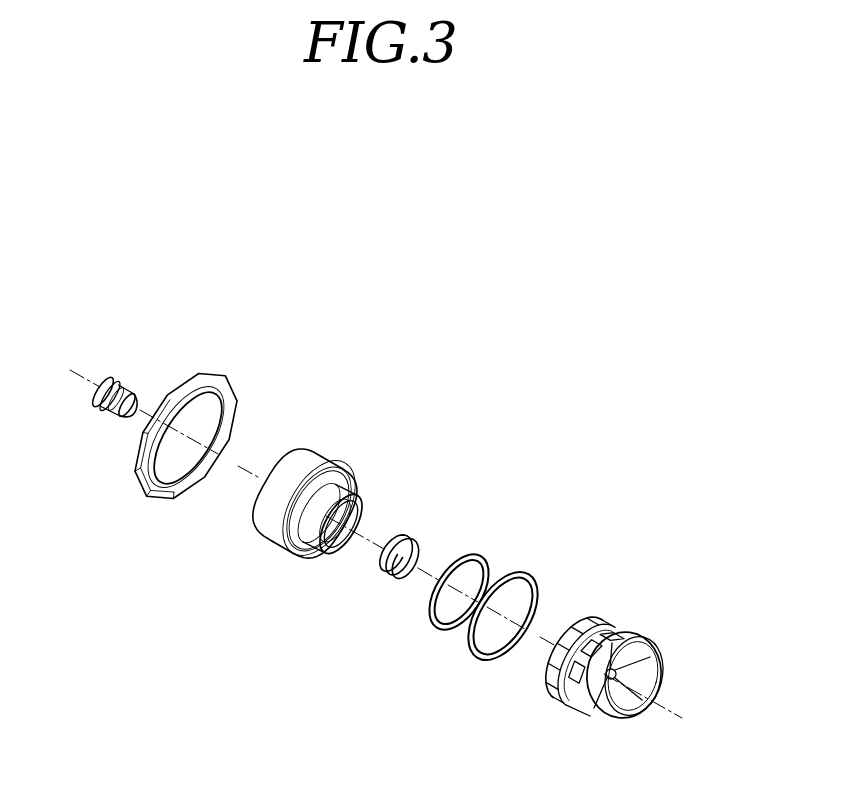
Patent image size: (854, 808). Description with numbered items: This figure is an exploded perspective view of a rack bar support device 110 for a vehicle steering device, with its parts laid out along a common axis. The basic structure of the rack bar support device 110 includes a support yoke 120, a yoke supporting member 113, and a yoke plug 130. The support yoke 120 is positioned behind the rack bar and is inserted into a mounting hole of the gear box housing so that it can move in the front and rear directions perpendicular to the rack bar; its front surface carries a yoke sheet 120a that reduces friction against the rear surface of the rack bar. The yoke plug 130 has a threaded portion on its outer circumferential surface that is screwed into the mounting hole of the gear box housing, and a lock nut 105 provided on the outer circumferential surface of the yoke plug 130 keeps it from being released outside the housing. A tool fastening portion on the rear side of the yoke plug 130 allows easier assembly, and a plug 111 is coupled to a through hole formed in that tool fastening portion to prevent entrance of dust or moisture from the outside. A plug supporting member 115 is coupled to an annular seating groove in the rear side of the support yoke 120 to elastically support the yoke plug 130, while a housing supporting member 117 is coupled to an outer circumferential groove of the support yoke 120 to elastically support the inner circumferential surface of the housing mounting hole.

The rack bar support device 110 is at (100, 197).
The plug 111 is at (136, 349).
The lock nut 105 is at (205, 389).
The yoke plug 130 is at (323, 462).
The yoke supporting member 113 is at (421, 503).
The plug supporting member 115 is at (478, 555).
The housing supporting member 117 is at (527, 580).
The support yoke 120 is at (641, 621).
The yoke sheet 120a is at (634, 680).